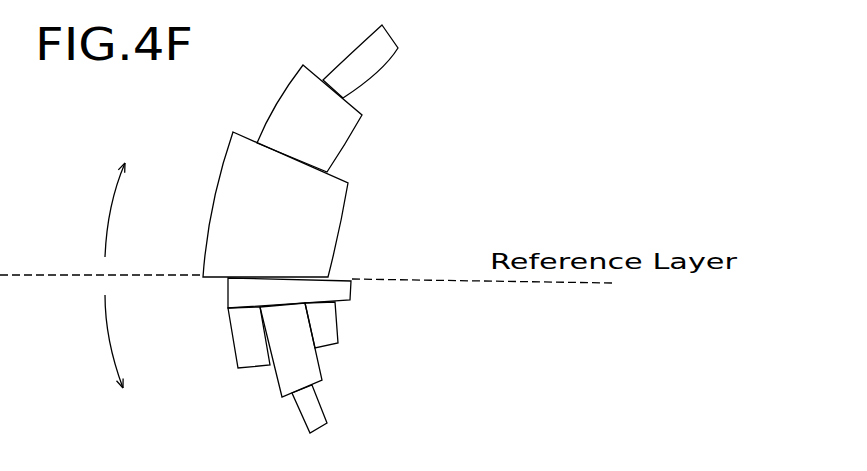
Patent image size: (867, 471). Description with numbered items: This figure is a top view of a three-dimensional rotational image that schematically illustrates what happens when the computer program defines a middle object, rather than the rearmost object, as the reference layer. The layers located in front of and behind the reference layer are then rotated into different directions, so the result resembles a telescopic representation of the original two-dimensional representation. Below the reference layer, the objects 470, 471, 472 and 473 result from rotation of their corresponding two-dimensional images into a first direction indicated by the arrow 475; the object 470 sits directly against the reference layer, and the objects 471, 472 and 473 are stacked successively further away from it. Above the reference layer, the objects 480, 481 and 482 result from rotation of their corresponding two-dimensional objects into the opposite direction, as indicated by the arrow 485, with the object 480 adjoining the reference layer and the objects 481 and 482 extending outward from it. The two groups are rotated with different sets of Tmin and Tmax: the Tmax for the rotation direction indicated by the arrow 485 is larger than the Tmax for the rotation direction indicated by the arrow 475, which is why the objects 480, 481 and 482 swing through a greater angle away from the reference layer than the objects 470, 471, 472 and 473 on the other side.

The object 470 is at (351, 293).
The object 471 is at (340, 328).
The object 472 is at (270, 377).
The object 473 is at (327, 423).
The arrow 475 is at (85, 341).
The object 480 is at (335, 223).
The object 481 is at (347, 135).
The object 482 is at (391, 33).
The arrow 485 is at (86, 210).